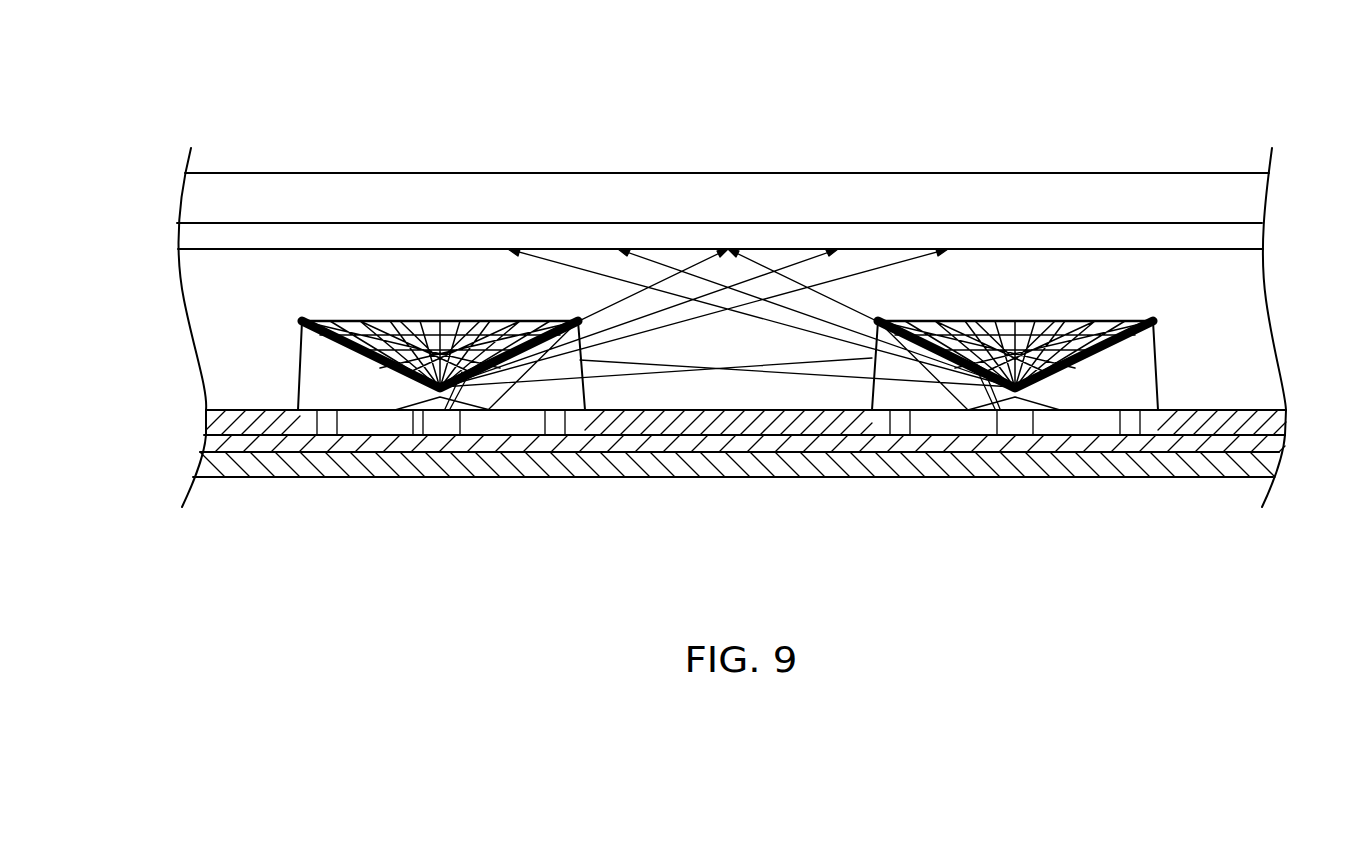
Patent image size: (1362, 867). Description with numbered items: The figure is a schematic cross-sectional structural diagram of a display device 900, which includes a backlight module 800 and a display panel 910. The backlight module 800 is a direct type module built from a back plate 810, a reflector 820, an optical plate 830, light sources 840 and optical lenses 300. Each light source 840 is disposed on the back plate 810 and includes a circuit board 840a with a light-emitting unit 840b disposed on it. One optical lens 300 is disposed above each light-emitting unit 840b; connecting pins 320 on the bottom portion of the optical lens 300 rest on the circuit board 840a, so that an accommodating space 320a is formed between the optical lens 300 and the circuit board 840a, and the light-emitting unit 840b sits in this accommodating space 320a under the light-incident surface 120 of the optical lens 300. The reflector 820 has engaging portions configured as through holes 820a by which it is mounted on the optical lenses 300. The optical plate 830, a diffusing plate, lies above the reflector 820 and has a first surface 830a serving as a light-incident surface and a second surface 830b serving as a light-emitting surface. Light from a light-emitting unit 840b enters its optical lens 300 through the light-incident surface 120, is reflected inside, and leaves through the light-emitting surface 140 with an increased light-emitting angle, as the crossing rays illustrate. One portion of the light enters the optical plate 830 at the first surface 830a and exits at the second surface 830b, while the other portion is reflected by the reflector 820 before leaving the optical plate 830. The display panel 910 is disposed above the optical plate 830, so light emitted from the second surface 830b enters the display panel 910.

The display device 900 is at (128, 70).
The display panel 910 is at (1252, 198).
The optical plate 830 is at (763, 239).
The first surface 830a is at (1092, 253).
The second surface 830b is at (1092, 220).
The backlight module 800 is at (160, 340).
The back plate 810 is at (1275, 463).
The reflector 820 is at (1275, 425).
The through hole 820a is at (568, 453).
The optical lens 300 is at (724, 430).
The light-emitting surface 140 is at (598, 393).
The light-incident surface 120 is at (415, 425).
The connecting pin 320 is at (327, 428).
The accommodating space 320a is at (1092, 428).
The light source 840 is at (740, 552).
The circuit board 840a is at (957, 442).
The light-emitting unit 840b is at (440, 428).